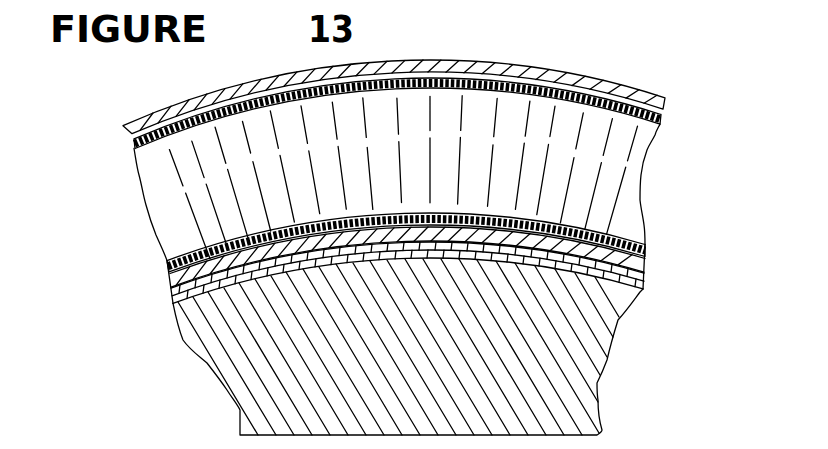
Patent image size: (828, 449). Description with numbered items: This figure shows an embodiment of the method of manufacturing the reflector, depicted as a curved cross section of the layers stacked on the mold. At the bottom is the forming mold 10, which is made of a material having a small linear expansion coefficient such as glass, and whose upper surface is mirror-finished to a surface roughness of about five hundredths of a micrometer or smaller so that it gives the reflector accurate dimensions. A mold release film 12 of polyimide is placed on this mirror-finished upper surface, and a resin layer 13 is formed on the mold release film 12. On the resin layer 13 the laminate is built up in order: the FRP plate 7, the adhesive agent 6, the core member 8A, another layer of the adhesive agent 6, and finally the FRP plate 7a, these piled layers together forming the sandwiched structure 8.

The FRP plate 7a is at (606, 80).
The adhesive agent 6 is at (665, 117).
The sandwiched structure 8 is at (155, 200).
The core member 8A is at (630, 193).
The FRP plate 7 is at (647, 275).
The resin layer 13 is at (168, 298).
The mold release film 12 is at (173, 312).
The forming mold 10 is at (563, 358).